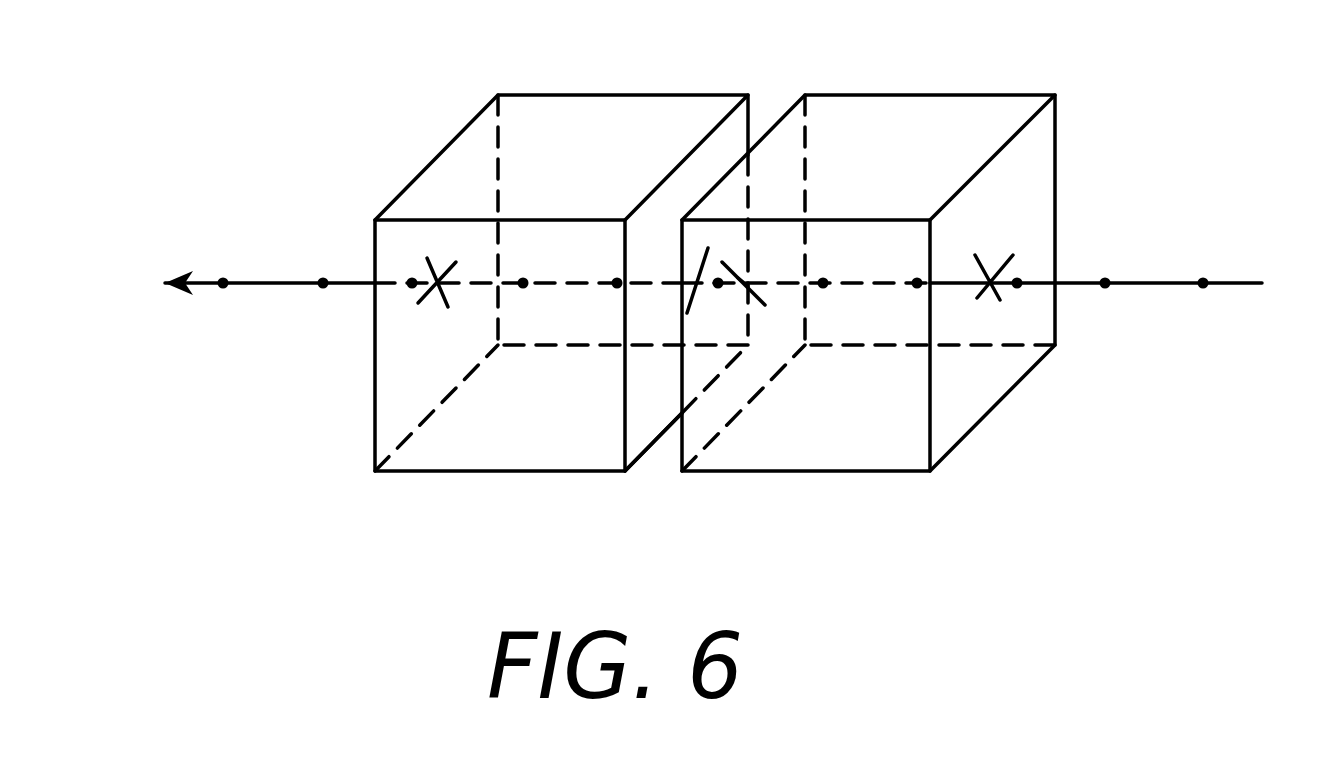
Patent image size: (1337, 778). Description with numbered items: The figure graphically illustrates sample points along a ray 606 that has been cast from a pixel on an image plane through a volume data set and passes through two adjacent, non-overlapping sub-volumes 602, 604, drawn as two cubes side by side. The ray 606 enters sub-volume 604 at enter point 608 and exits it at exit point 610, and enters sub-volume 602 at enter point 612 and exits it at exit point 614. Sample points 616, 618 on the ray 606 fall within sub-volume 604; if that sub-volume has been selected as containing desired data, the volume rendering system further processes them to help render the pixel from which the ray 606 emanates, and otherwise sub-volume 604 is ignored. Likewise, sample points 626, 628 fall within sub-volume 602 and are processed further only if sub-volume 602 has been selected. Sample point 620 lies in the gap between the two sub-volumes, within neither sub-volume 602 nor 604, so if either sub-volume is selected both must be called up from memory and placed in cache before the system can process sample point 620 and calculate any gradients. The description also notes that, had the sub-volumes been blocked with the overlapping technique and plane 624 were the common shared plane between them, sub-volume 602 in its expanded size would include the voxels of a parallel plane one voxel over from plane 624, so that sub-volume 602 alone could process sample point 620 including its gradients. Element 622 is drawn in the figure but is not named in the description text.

The sub-volume 602 is at (628, 95).
The sub-volume 604 is at (927, 95).
The ray 606 is at (1235, 283).
The enter point 608 is at (988, 265).
The exit point 610 is at (738, 278).
The enter point 612 is at (720, 302).
The exit point 614 is at (427, 296).
The sample point 616 is at (917, 288).
The sample point 618 is at (823, 288).
The sample point 620 is at (728, 313).
The edge of first cube 622 is at (643, 413).
The plane 624 is at (740, 398).
The sample point 626 is at (523, 288).
The sample point 628 is at (617, 283).